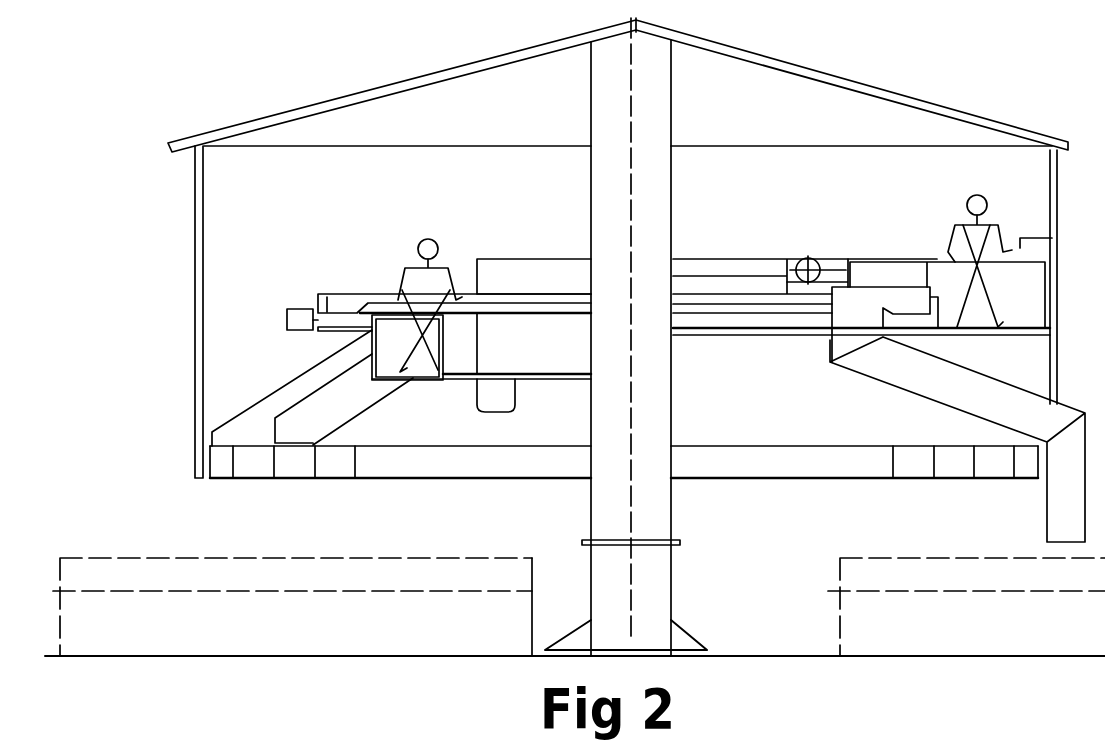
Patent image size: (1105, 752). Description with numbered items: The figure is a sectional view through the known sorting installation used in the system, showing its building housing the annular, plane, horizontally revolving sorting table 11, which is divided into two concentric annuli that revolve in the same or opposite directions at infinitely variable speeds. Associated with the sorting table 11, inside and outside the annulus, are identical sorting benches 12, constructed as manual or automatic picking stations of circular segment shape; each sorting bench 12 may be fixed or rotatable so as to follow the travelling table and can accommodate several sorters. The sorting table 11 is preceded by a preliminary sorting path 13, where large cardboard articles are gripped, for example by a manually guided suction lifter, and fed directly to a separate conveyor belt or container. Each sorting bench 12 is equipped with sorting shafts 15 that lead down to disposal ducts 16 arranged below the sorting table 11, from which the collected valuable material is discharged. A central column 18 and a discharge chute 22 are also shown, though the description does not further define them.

The sorting table 11 is at (340, 297).
The sorting bench 12 is at (452, 262).
The preliminary sorting path 13 is at (938, 244).
The sorting shaft 15 is at (311, 414).
The disposal duct 16 is at (256, 475).
The central column 18 is at (661, 210).
The discharge chute 22 is at (957, 393).